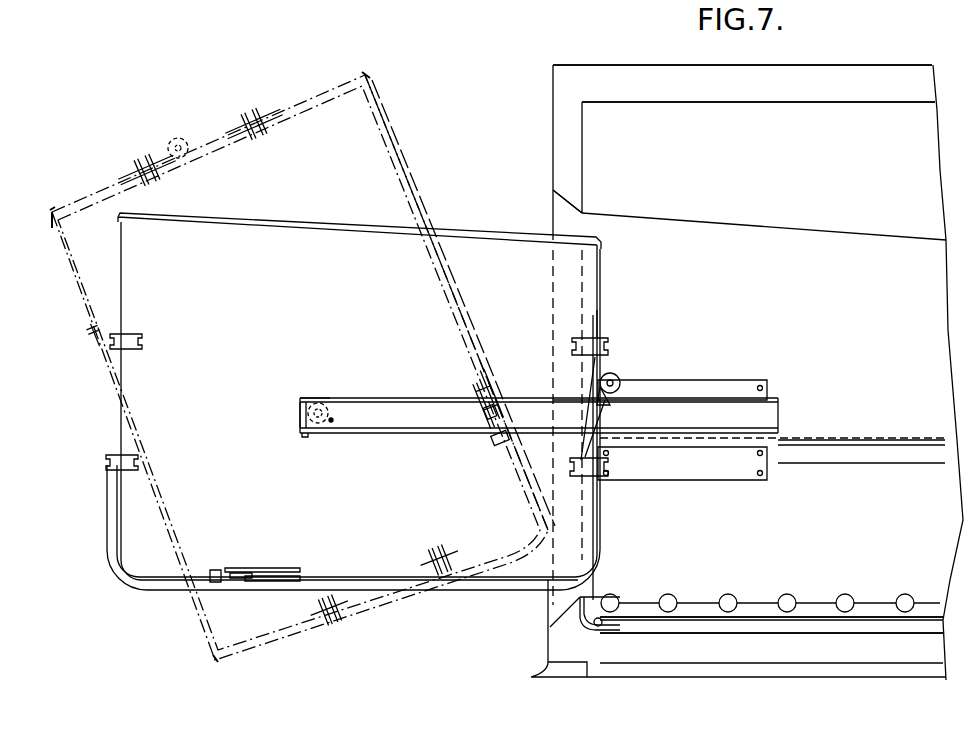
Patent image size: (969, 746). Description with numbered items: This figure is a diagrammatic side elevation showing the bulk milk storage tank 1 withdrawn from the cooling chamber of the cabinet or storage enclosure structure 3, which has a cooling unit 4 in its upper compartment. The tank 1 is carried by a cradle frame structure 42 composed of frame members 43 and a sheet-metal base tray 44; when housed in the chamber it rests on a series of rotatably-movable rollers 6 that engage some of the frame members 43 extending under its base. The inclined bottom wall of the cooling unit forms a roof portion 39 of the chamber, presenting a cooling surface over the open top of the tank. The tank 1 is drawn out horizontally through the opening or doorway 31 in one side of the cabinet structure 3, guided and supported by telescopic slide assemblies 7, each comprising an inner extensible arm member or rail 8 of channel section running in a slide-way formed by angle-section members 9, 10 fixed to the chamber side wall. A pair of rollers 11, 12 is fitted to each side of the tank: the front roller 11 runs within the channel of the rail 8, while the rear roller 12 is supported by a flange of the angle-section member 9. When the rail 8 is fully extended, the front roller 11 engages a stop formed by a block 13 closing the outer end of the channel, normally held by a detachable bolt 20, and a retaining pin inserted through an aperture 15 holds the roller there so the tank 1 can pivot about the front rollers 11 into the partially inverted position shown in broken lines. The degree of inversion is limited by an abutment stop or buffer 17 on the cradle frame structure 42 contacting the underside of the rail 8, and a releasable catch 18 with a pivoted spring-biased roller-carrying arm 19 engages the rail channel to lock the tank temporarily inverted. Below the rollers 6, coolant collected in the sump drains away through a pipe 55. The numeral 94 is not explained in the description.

The milk storage tank 1 is at (329, 367).
The cabinet or storage enclosure structure 3 is at (551, 133).
The cooling unit 4 is at (620, 100).
The rollers 6 is at (780, 600).
The telescopic slide assemblies 7 is at (546, 402).
The extensible arm member or rail 8 is at (393, 405).
The angle-section member 9 is at (692, 386).
The angle-section member 10 is at (670, 470).
The front roller 11 is at (318, 425).
The rear roller 12 is at (614, 380).
The block 13 is at (300, 410).
The aperture 15 is at (333, 423).
The abutment stop or buffer 17 is at (526, 432).
The releasable catch 18 is at (490, 372).
The pivoted spring-biased roller-carrying arm 19 is at (490, 430).
The detachable bolt 20 is at (304, 398).
The opening or doorway 31 is at (565, 213).
The roof portion 39 is at (772, 224).
The cradle frame structure 42 is at (410, 160).
The frame members 43 is at (468, 304).
The sheet-metal base tray 44 is at (375, 92).
The pipe 55 is at (596, 628).
The rail 94 is at (870, 604).